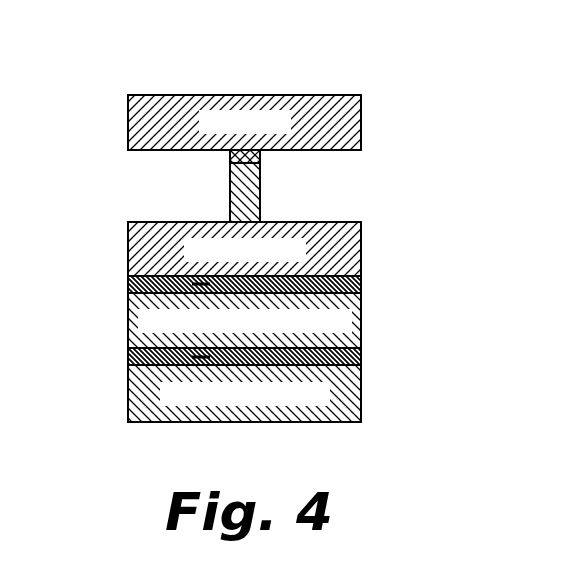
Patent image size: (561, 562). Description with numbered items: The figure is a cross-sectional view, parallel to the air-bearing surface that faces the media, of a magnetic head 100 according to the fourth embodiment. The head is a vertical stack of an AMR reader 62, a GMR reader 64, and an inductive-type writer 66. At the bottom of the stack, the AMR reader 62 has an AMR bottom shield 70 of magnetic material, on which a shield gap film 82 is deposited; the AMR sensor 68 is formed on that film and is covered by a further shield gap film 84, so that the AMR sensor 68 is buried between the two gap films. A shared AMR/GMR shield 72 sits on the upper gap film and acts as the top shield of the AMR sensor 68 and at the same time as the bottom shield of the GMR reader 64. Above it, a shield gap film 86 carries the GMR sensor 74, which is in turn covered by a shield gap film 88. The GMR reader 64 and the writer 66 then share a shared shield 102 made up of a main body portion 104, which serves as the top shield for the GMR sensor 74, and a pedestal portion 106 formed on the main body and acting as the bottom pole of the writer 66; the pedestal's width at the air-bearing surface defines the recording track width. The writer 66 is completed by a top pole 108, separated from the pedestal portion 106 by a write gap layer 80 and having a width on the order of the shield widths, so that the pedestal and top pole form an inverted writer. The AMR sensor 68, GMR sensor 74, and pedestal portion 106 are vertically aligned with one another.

The magnetic head 100 is at (313, 52).
The top pole 108 is at (362, 122).
The write gap layer 80 is at (268, 157).
The pedestal portion 106 is at (291, 186).
The main body portion 104 is at (340, 222).
The shared shield 102 is at (410, 155).
The writer 66 is at (63, 93).
The GMR sensor 74 is at (192, 284).
The GMR reader 64 is at (83, 222).
The AMR reader 62 is at (103, 293).
The AMR sensor 68 is at (192, 357).
The shield gap film 86 is at (282, 289).
The shield gap film 88 is at (362, 285).
The shared AMR/GMR shield 72 is at (362, 322).
The shield gap film 82 is at (282, 361).
The shield gap film 84 is at (362, 357).
The AMR bottom shield 70 is at (362, 397).